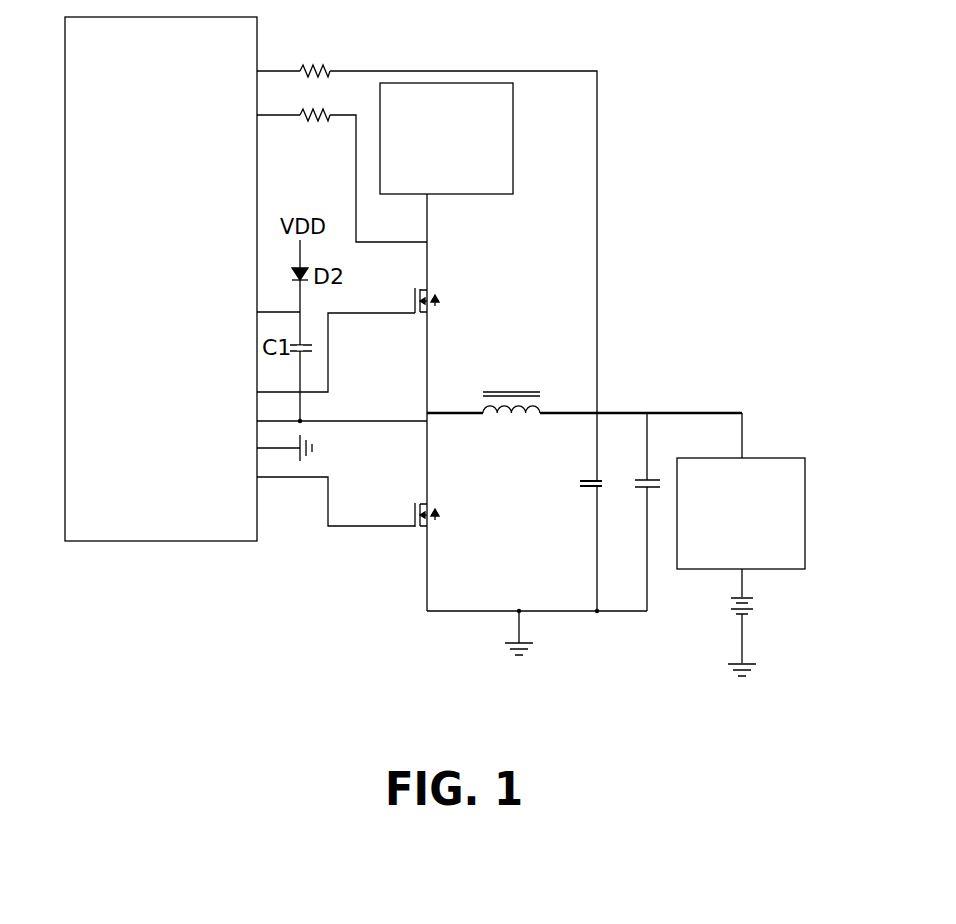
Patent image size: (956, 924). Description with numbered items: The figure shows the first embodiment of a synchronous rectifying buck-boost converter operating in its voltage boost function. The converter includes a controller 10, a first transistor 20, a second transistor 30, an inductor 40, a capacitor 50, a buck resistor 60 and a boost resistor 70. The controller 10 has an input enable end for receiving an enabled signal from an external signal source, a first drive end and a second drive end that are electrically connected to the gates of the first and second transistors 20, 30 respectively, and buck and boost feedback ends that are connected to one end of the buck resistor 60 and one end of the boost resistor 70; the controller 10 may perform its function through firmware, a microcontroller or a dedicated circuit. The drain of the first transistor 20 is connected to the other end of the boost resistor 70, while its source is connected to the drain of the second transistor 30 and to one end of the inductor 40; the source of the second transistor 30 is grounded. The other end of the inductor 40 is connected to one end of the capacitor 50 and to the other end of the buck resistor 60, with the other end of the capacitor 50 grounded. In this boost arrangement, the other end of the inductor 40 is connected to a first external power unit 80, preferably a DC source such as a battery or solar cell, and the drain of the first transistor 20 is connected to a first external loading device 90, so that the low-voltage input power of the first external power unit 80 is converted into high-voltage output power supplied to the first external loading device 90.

The controller 10 is at (160, 541).
The first transistor 20 is at (435, 288).
The second transistor 30 is at (423, 530).
The inductor 40 is at (512, 390).
The capacitor 50 is at (583, 490).
The buck resistor 60 is at (315, 65).
The boost resistor 70 is at (313, 122).
The first external power unit 80 is at (772, 458).
The first external loading device 90 is at (440, 83).